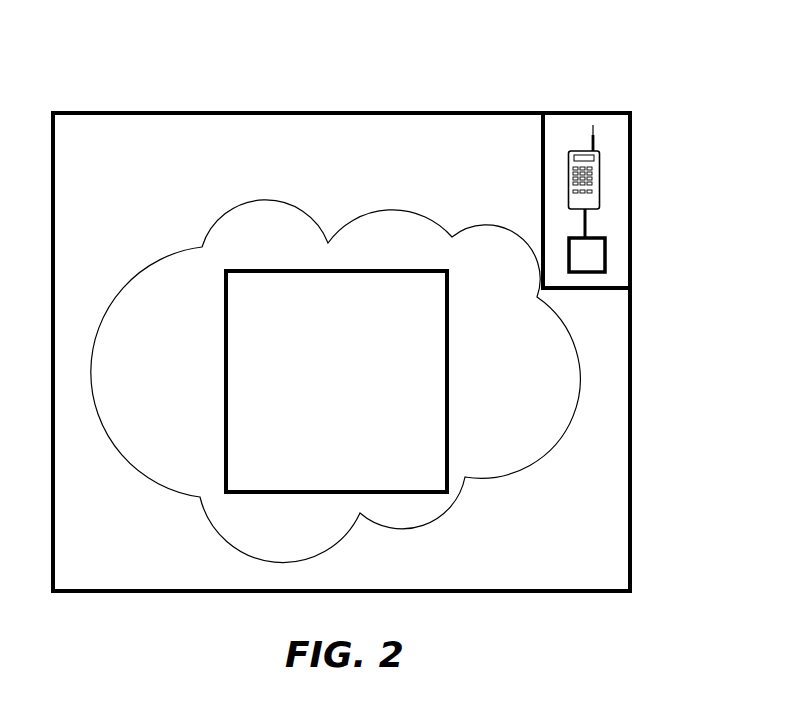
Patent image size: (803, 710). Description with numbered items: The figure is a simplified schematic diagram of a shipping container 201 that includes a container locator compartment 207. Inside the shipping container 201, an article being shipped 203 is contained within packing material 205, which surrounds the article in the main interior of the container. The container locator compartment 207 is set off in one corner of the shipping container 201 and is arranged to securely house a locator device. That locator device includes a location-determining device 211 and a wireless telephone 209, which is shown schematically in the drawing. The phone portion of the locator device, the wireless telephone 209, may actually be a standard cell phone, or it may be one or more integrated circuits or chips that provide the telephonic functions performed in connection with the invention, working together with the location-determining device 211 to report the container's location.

The shipping container 201 is at (218, 110).
The article being shipped 203 is at (449, 370).
The packing material 205 is at (185, 242).
The container locator compartment 207 is at (580, 100).
The wireless telephone 209 is at (600, 173).
The location-determining device 211 is at (606, 247).